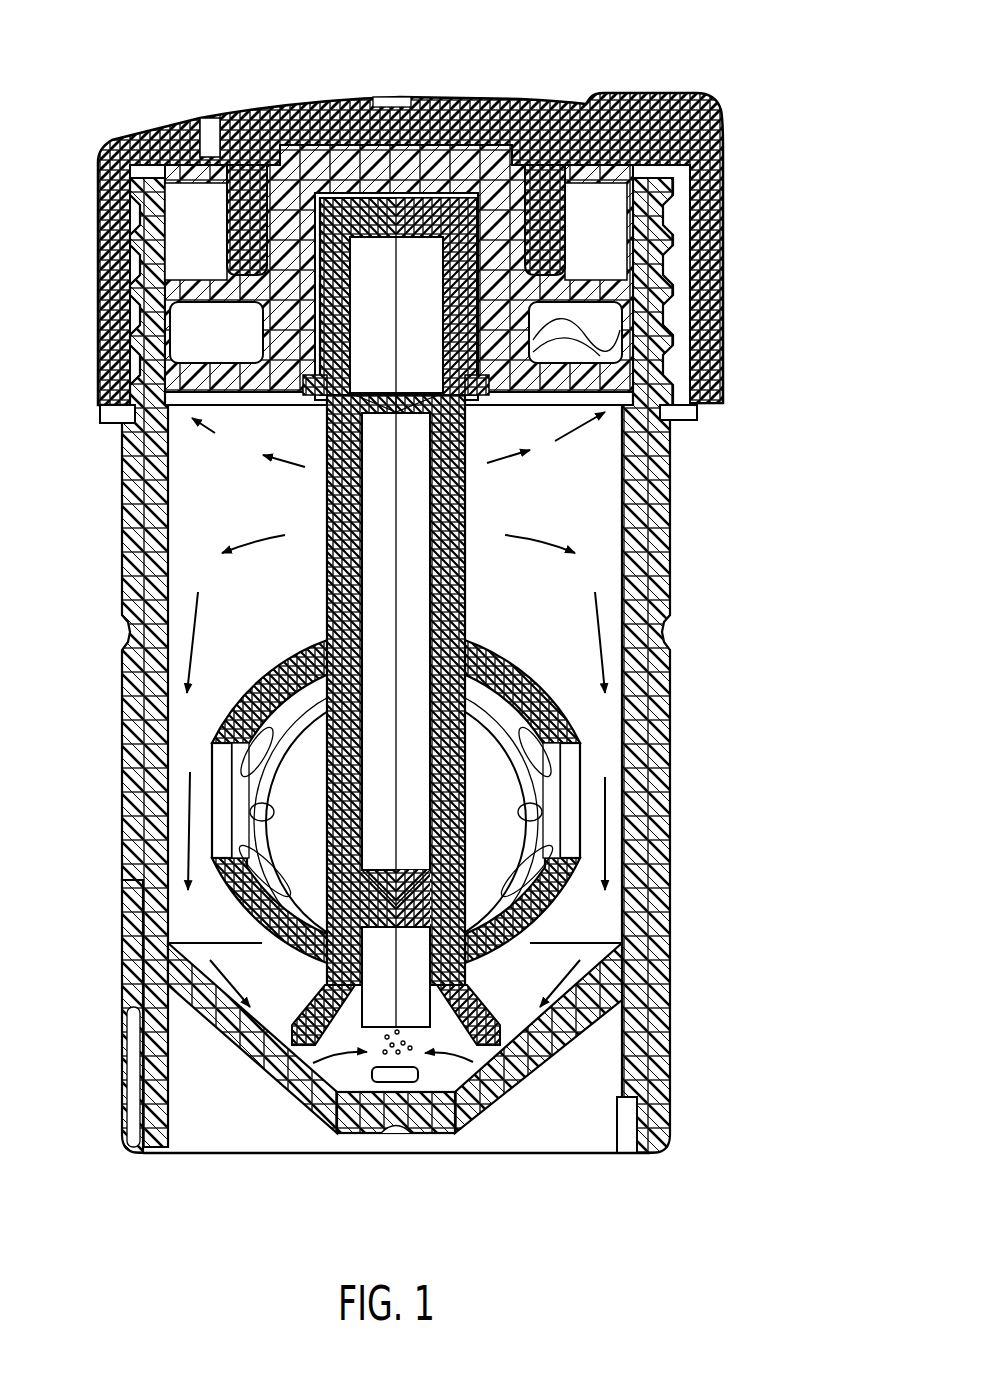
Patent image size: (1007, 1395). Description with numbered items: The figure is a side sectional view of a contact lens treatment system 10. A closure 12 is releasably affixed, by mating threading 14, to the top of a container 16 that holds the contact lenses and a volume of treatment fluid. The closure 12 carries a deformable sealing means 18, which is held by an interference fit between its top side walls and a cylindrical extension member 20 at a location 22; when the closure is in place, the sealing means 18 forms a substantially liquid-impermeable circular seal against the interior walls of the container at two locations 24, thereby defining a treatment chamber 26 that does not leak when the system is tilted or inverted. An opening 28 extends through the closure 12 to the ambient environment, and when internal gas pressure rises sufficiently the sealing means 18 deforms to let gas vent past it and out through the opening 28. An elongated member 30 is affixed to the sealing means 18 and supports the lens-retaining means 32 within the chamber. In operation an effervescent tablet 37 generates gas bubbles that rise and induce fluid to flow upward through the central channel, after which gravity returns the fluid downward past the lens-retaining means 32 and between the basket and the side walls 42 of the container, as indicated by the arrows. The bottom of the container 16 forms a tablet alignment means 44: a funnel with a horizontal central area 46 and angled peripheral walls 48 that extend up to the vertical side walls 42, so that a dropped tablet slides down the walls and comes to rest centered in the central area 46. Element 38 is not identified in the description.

The contact lens treatment system 10 is at (451, 609).
The closure 12 is at (703, 128).
The mating threading 14 is at (718, 256).
The container 16 is at (653, 733).
The deformable sealing means 18 is at (610, 330).
The cylindrical extension member 20 is at (545, 120).
The location 22 is at (253, 240).
The seal locations 24 is at (157, 283).
The treatment chamber 26 is at (175, 495).
The opening 28 is at (209, 125).
The elongated member 30 is at (467, 470).
The lens-retaining means 32 is at (567, 733).
The effervescent tablet 37 is at (398, 1078).
The nozzle bore 38 is at (392, 1040).
The side walls 42 is at (623, 857).
The tablet alignment means 44 is at (468, 1088).
The central area 46 is at (340, 1092).
The peripheral walls 48 is at (175, 968).